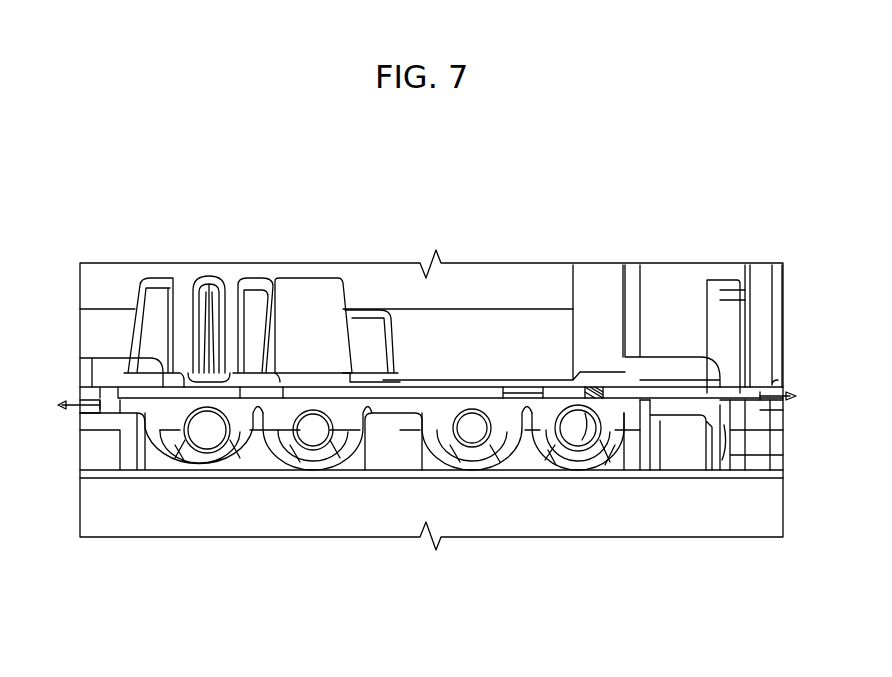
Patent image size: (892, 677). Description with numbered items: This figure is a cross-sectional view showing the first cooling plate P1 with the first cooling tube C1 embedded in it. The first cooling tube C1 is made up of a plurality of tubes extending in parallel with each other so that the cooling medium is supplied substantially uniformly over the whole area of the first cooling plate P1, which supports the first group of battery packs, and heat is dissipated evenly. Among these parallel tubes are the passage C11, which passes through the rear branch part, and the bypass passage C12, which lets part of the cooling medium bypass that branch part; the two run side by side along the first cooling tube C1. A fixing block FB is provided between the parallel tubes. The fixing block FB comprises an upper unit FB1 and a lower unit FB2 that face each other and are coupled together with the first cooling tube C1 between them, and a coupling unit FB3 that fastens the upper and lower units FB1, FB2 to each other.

The first cooling plate P1 is at (681, 258).
The fixing block FB is at (402, 405).
The upper unit FB1 is at (503, 408).
The lower unit FB2 is at (548, 440).
The coupling unit FB3 is at (598, 440).
The first cooling tube C1 is at (258, 510).
The passage C11 is at (210, 446).
The bypass passage C12 is at (312, 450).